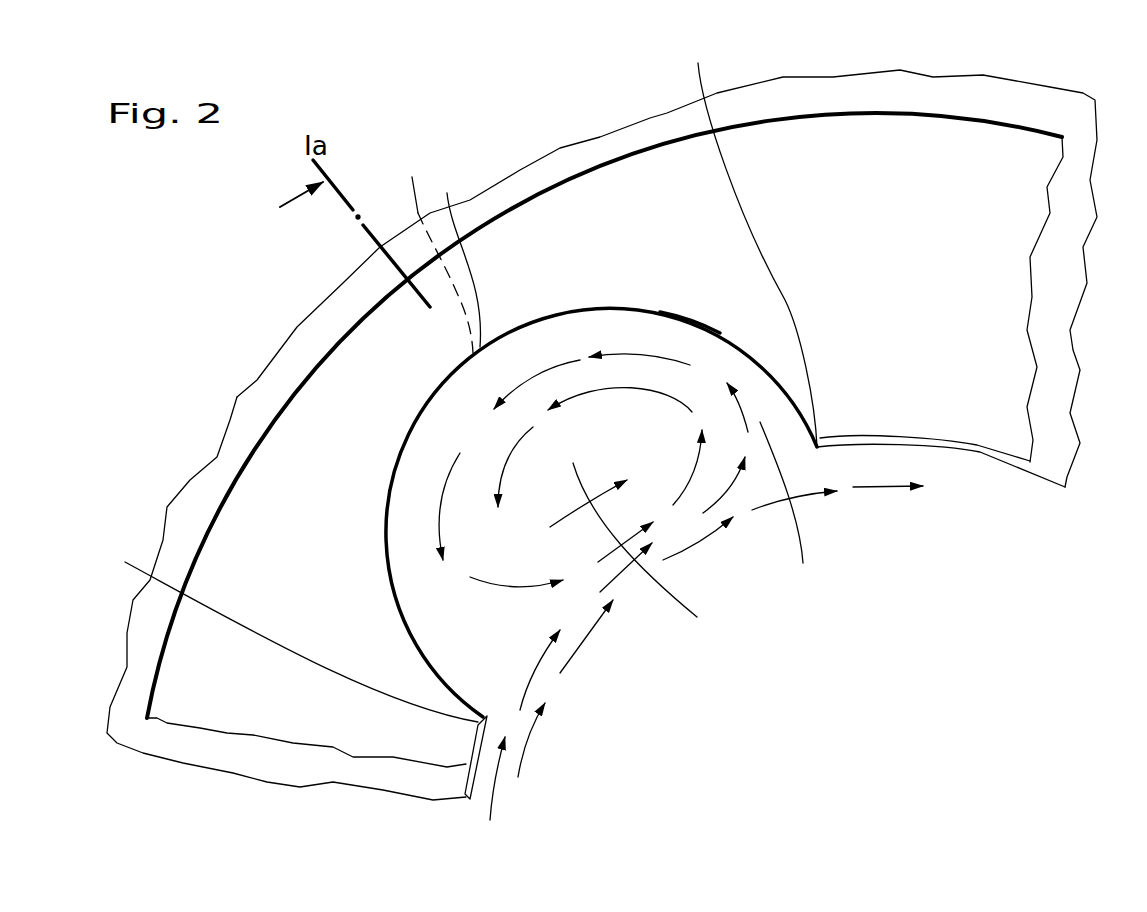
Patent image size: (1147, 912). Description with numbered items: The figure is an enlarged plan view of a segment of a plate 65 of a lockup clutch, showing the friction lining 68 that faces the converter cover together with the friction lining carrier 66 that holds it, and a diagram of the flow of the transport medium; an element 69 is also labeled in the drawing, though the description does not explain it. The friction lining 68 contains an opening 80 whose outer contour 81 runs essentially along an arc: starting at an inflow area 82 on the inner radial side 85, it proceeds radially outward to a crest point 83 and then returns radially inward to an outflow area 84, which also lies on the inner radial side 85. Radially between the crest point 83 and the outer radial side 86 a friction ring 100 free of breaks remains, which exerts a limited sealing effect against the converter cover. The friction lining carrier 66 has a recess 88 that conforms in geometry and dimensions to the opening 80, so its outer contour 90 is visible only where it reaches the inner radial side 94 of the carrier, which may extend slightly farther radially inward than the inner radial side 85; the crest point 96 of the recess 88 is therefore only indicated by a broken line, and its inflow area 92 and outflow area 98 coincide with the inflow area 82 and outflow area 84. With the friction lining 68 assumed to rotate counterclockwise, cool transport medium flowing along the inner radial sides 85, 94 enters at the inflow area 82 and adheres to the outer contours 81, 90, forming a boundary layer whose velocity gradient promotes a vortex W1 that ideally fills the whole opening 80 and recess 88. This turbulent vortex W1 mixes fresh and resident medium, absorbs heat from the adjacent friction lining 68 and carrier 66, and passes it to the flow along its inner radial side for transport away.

The plate 65 is at (857, 68).
The friction lining carrier 66 is at (233, 468).
The friction lining 68 is at (330, 347).
The housing flange 69 is at (945, 138).
The opening 80 is at (597, 335).
The outer contour 81 is at (660, 310).
The inflow area 82 is at (465, 643).
The crest point 83 is at (457, 258).
The outflow area 84 is at (772, 428).
The inner radial side 85 is at (467, 758).
The outer radial side 86 is at (768, 118).
The recess 88 is at (545, 333).
The outer contour 90 is at (455, 379).
The inflow area 92 is at (457, 625).
The inner radial side 94 is at (463, 787).
The crest point 96 is at (434, 252).
The outflow area 98 is at (789, 510).
The friction ring 100 is at (430, 323).
The vortex W1 is at (654, 549).